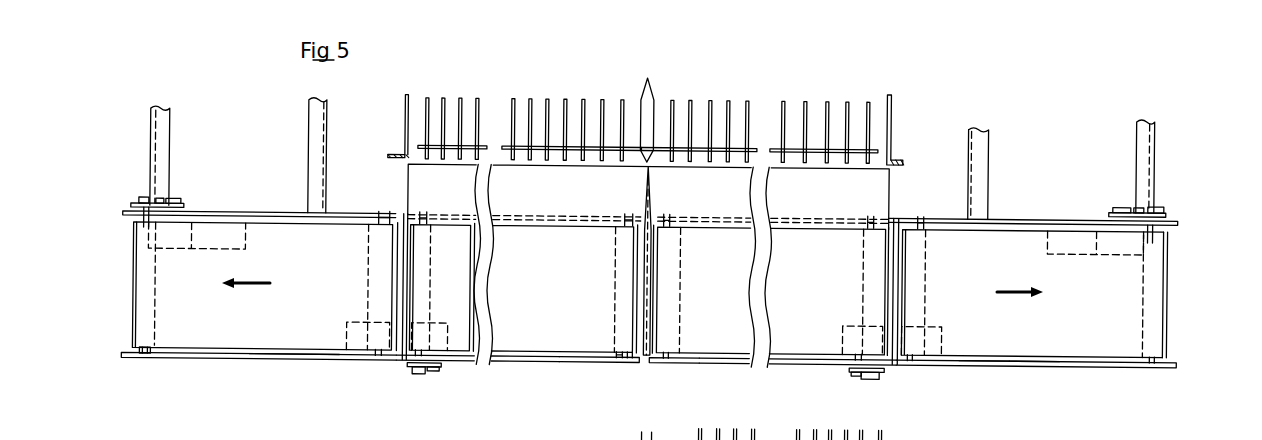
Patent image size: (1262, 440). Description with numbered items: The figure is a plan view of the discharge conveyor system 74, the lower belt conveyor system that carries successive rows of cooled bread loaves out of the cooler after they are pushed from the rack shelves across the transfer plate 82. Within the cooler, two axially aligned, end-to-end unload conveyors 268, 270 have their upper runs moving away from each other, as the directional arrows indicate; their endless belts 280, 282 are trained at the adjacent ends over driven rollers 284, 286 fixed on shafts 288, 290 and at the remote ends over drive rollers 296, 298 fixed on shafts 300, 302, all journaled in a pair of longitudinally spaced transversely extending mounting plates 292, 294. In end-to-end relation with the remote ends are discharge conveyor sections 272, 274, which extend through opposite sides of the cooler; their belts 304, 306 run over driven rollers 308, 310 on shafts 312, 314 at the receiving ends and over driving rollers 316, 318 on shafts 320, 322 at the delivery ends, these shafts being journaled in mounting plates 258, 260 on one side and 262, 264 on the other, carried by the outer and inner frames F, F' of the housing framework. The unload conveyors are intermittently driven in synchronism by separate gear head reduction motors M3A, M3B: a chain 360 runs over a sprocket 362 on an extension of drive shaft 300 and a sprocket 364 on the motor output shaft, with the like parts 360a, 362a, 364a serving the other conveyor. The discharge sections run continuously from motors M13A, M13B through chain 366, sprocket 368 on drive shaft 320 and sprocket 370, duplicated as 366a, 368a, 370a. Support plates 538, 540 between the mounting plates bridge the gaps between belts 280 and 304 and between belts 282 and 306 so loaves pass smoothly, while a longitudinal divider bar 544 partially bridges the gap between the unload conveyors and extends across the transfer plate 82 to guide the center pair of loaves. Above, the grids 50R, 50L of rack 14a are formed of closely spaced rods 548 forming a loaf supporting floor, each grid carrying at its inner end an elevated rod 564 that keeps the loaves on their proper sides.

The outer frame F is at (647, 160).
The inner frame F' is at (652, 159).
The rack 14a is at (899, 111).
The left grid 50L is at (532, 90).
The right grid 50R is at (731, 91).
The discharge conveyor system 74 is at (1176, 256).
The transfer plate 82 is at (880, 200).
The mounting plate 258 is at (194, 359).
The mounting plate 260 is at (243, 212).
The mounting plate 262 is at (997, 367).
The mounting plate 264 is at (1022, 220).
The unload conveyor 268 is at (581, 366).
The unload conveyor 270 is at (747, 371).
The discharge conveyor section 272 is at (297, 366).
The discharge conveyor section 274 is at (1028, 373).
The endless belt 280 is at (535, 340).
The endless belt 282 is at (802, 345).
The driven roller 284 is at (615, 315).
The driven roller 286 is at (680, 345).
The shaft 288 is at (620, 354).
The shaft 290 is at (670, 356).
The mounting plate 292 is at (502, 363).
The mounting plate 294 is at (498, 215).
The drive roller 296 is at (447, 295).
The drive roller 298 is at (862, 303).
The drive shaft 300 is at (423, 222).
The shaft 302 is at (867, 228).
The endless belt 304 is at (252, 335).
The endless belt 306 is at (1072, 343).
The driven roller 308 is at (368, 292).
The driven roller 310 is at (925, 307).
The shaft 312 is at (378, 221).
The shaft 314 is at (918, 226).
The driving roller 316 is at (158, 302).
The driving roller 318 is at (1143, 312).
The drive shaft 320 is at (157, 348).
The shaft 322 is at (1157, 362).
The chain 360 is at (422, 376).
The chain 360a is at (877, 378).
The sprocket 362 is at (417, 376).
The sprocket 362a is at (873, 374).
The sprocket 364 is at (428, 371).
The sprocket 364a is at (857, 374).
The chain 366 is at (157, 203).
The chain 366a is at (1138, 215).
The sprocket 368 is at (140, 200).
The sprocket 368a is at (1160, 210).
The sprocket 370 is at (173, 203).
The sprocket 370a is at (1123, 212).
The support plate 538 is at (400, 355).
The support plate 540 is at (893, 368).
The divider bar 544 is at (652, 202).
The rods 548 is at (827, 103).
The elevated rod 564 is at (653, 432).
The gear head reduction motor M13A is at (195, 251).
The gear head reduction motor M13B is at (1122, 258).
The gear head reduction motor M3A is at (448, 330).
The gear head reduction motor M3B is at (835, 327).